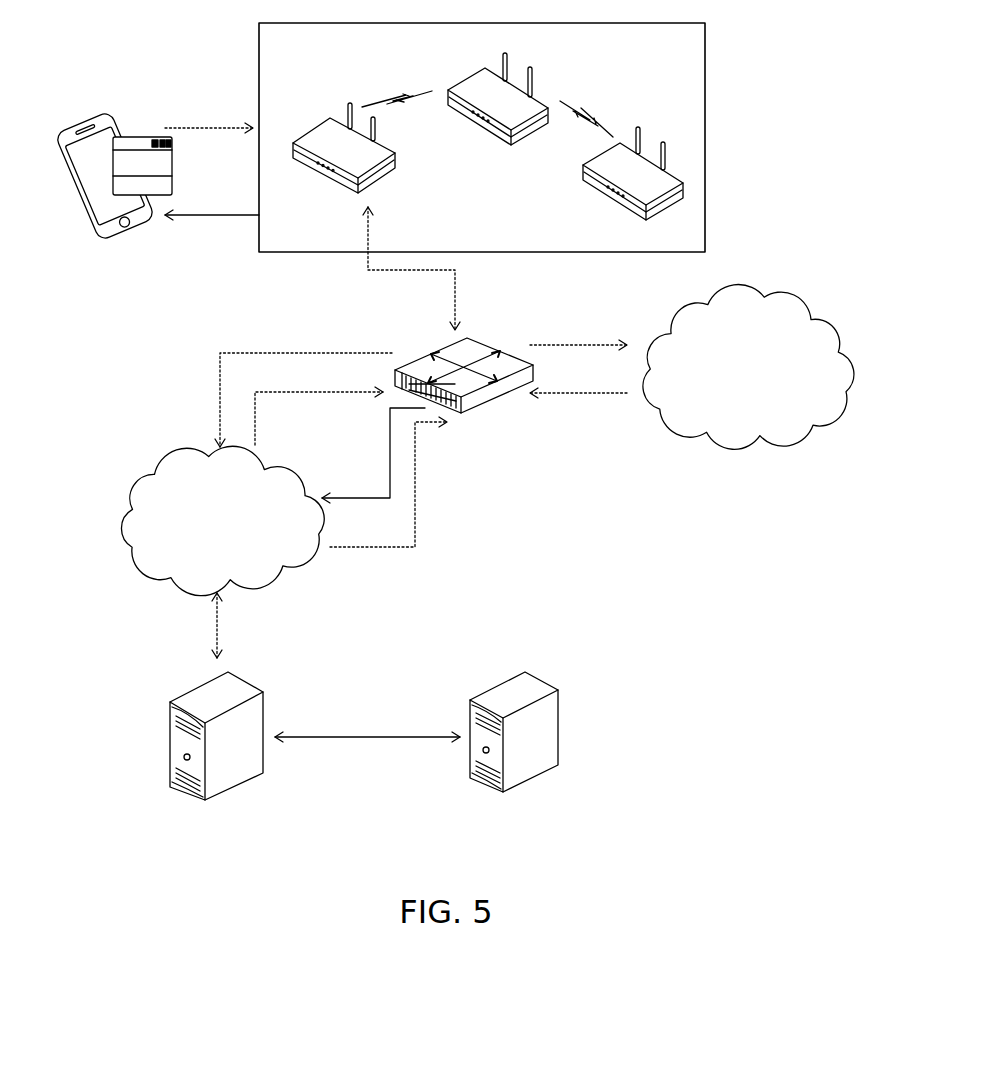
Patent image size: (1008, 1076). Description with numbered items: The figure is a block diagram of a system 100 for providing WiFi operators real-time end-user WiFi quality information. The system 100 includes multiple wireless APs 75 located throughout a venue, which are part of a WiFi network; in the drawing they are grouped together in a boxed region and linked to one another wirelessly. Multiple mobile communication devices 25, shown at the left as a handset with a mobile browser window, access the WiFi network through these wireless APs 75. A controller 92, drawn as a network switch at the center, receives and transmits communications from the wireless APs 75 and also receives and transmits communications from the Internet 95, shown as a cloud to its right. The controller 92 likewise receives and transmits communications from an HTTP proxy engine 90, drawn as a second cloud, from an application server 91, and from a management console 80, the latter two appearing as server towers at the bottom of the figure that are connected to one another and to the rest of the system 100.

The system 100 is at (782, 98).
The wireless AP 75 is at (300, 70).
The mobile communication device 25 is at (98, 216).
The controller 92 is at (480, 340).
The Internet 95 is at (652, 423).
The HTTP proxy engine 90 is at (132, 573).
The application server 91 is at (170, 737).
The management console 80 is at (560, 725).